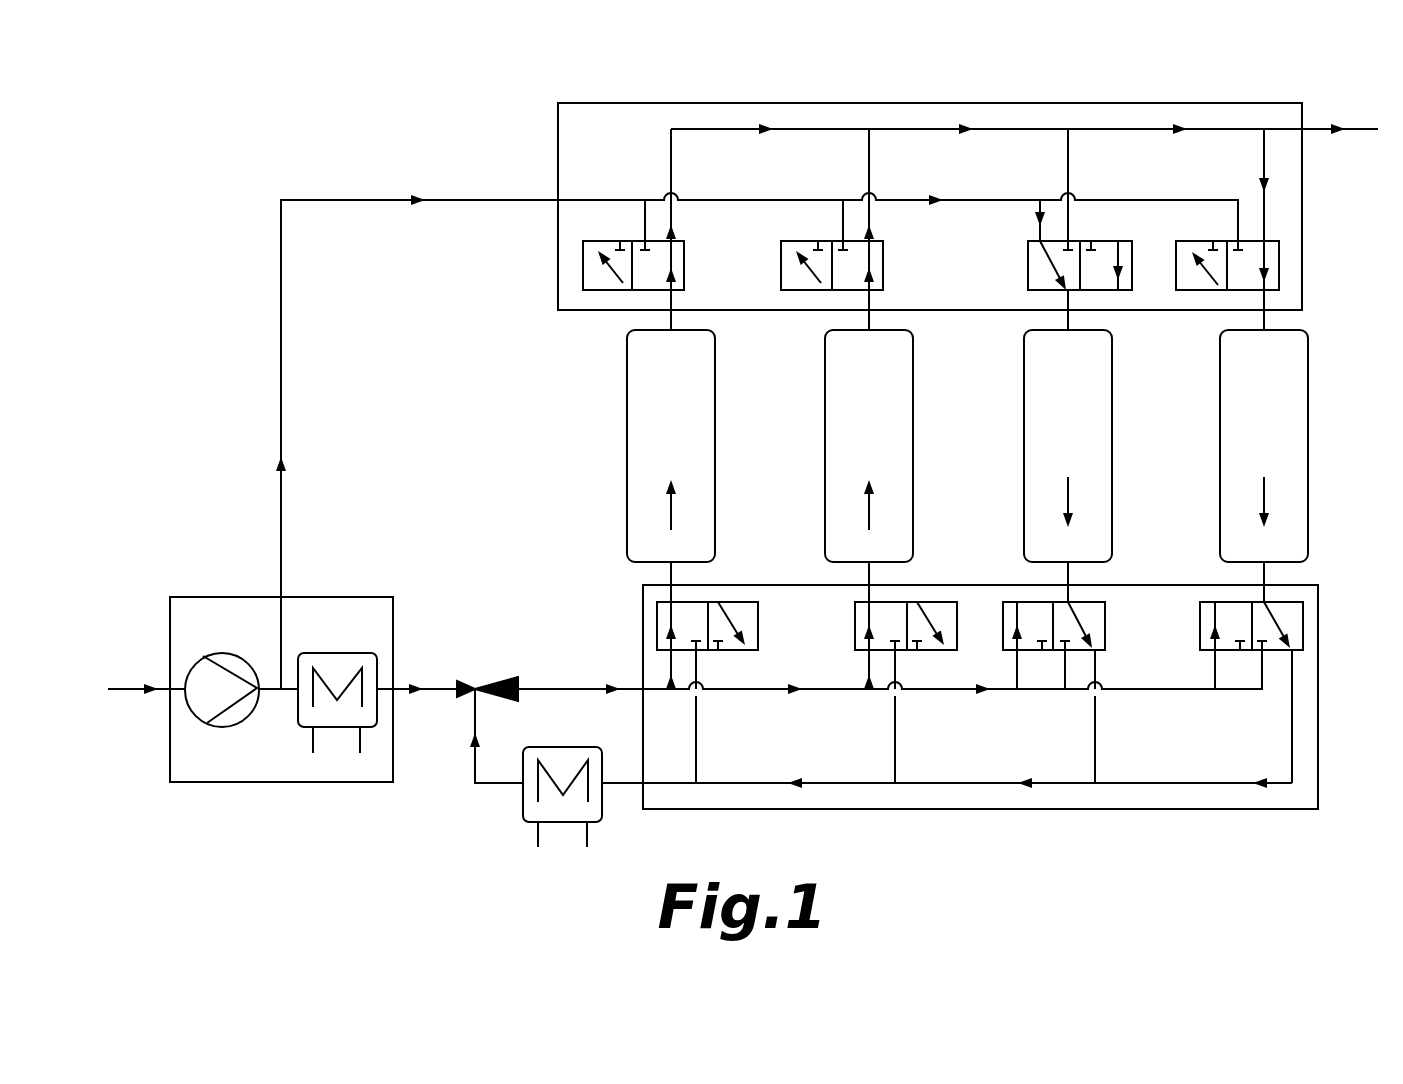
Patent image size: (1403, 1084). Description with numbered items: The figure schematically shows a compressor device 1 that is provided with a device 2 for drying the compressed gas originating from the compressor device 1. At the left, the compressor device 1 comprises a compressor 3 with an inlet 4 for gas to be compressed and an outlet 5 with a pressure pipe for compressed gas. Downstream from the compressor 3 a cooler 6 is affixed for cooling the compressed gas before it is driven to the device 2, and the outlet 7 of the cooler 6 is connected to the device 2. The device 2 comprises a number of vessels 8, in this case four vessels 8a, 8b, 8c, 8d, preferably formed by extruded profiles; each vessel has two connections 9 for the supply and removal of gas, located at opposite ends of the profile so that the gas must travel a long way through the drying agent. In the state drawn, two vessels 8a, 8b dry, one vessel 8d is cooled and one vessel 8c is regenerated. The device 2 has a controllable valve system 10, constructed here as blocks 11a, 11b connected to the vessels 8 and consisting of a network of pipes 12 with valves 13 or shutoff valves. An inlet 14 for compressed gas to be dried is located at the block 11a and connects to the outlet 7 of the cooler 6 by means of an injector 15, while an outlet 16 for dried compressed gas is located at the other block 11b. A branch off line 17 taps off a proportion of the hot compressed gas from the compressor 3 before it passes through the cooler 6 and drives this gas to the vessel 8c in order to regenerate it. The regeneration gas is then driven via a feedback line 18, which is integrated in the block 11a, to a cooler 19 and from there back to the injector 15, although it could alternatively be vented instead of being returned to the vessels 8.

The compressor device 1 is at (183, 154).
The device for drying compressed gas 2 is at (991, 739).
The compressor 3 is at (222, 653).
The inlet 4 is at (125, 689).
The outlet 5 is at (270, 688).
The cooler 6 is at (370, 727).
The outlet of the cooler 7 is at (402, 692).
The vessels 8 is at (881, 446).
The vessel 8a is at (640, 403).
The vessel 8b is at (845, 403).
The vessel 8c is at (1040, 403).
The vessel 8d is at (1237, 403).
The connections 9 is at (671, 330).
The controllable valve system 10 is at (1319, 305).
The block 11a is at (643, 809).
The block 11b is at (558, 125).
The pipes 12 is at (900, 200).
The valves 13 is at (593, 283).
The inlet 14 is at (643, 689).
The injector 15 is at (475, 689).
The outlet 16 is at (1304, 125).
The branch off line 17 is at (281, 345).
The feedback line 18 is at (958, 783).
The cooler 19 is at (523, 810).